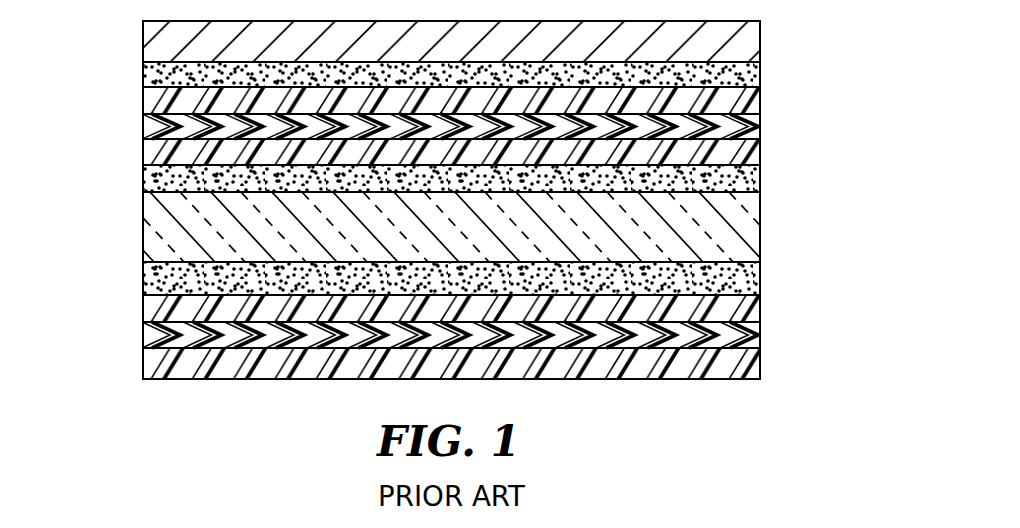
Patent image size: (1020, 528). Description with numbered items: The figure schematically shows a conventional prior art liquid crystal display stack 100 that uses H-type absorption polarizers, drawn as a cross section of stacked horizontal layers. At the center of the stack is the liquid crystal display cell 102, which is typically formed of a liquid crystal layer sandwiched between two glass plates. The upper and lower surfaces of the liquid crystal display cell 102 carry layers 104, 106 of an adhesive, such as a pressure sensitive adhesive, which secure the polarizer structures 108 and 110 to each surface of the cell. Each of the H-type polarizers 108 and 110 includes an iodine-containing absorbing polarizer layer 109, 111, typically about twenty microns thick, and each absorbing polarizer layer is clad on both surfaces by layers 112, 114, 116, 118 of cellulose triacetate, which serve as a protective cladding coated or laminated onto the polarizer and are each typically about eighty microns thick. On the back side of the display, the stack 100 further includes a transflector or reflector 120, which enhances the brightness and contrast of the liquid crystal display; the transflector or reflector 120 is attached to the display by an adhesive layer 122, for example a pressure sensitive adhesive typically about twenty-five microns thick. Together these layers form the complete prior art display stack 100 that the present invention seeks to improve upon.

The liquid crystal display stack 100 is at (110, 227).
The liquid crystal display cell 102 is at (761, 237).
The adhesive layer 104 is at (761, 180).
The adhesive layer 106 is at (761, 279).
The polarizer structure 108 is at (832, 87).
The absorbing polarizer layer 109 is at (761, 124).
The polarizer structure 110 is at (830, 297).
The absorbing polarizer layer 111 is at (761, 334).
The cellulose triacetate layer 112 is at (143, 100).
The cellulose triacetate layer 114 is at (143, 156).
The cellulose triacetate layer 116 is at (143, 310).
The cellulose triacetate layer 118 is at (143, 366).
The transflector or reflector 120 is at (761, 38).
The adhesive layer 122 is at (761, 76).